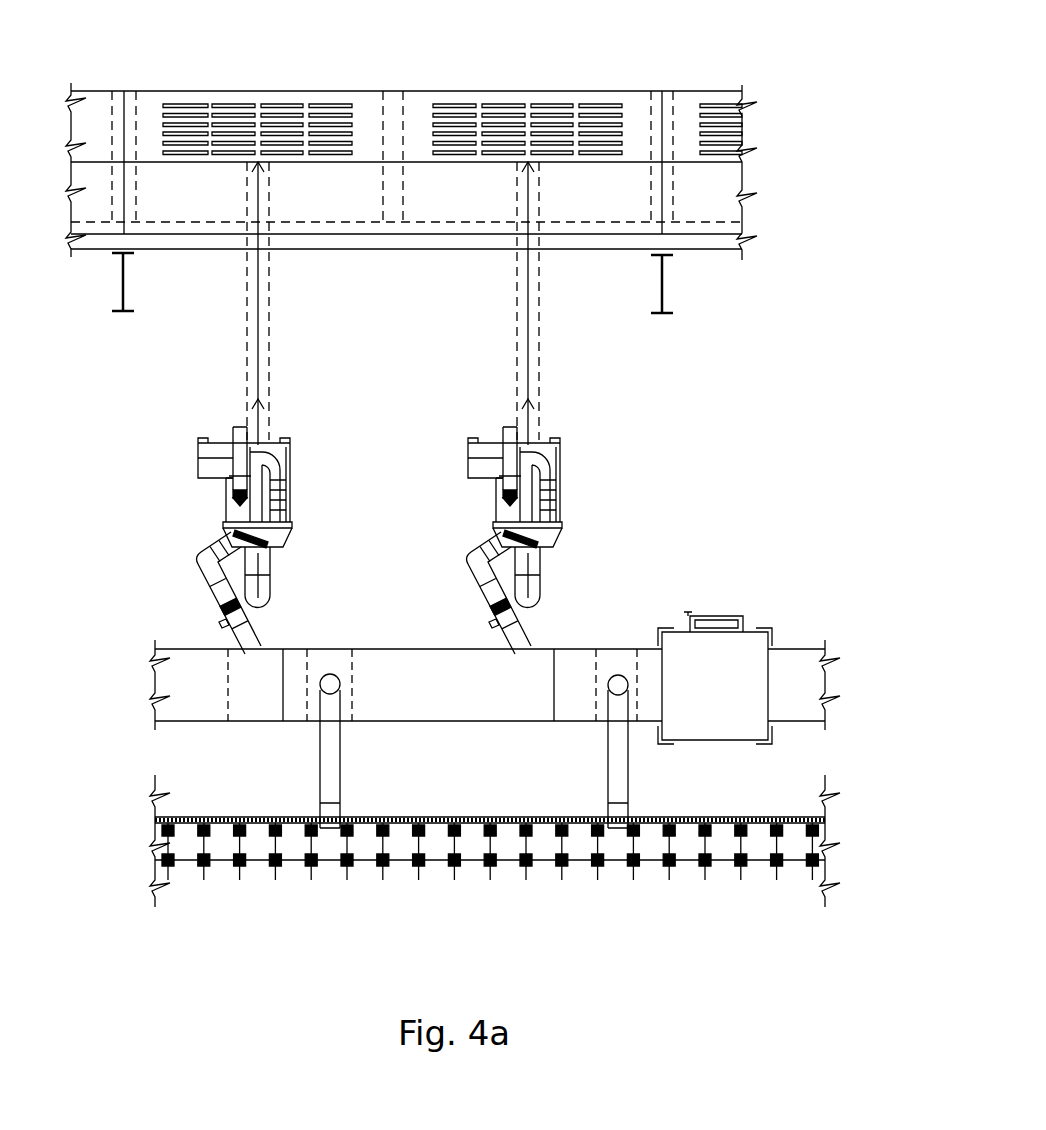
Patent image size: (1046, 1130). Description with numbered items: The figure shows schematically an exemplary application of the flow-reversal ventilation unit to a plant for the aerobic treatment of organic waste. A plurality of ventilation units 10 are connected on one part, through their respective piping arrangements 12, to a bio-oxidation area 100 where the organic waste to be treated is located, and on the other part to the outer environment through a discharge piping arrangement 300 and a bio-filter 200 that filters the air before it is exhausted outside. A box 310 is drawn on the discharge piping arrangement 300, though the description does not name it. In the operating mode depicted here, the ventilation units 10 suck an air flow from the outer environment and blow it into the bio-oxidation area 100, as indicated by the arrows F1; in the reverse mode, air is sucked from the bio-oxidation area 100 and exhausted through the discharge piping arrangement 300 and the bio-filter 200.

The bio-oxidation area 100 is at (683, 187).
The piping arrangement 12 is at (246, 330).
The ventilation unit 10 is at (302, 485).
The arrows indicating air flow F1 is at (616, 607).
The discharge piping arrangement 300 is at (222, 638).
The duct box 310 is at (713, 657).
The bio-filter 200 is at (327, 840).